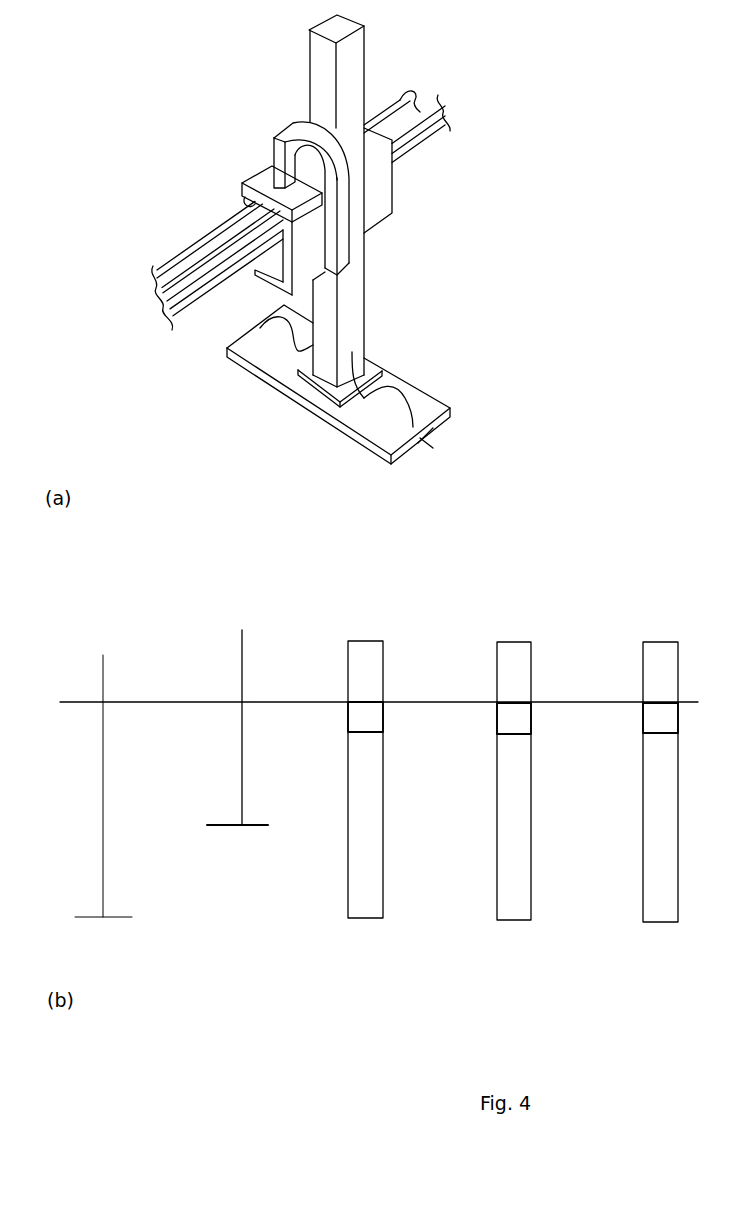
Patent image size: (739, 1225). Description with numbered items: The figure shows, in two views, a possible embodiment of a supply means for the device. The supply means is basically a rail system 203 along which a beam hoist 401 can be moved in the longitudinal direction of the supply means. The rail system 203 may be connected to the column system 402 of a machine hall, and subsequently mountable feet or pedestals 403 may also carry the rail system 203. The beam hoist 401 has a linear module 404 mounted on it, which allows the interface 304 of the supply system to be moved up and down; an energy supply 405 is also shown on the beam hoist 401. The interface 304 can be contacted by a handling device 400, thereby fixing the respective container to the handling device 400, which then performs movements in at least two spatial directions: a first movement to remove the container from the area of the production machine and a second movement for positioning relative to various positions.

The rail system 203 is at (213, 283).
The interface 304 is at (418, 448).
The handling device 400 is at (376, 368).
The beam hoist 401 is at (260, 182).
The column 402 is at (657, 904).
The pedestal 403 is at (104, 882).
The linear module 404 is at (344, 302).
The energy supply 405 is at (297, 142).